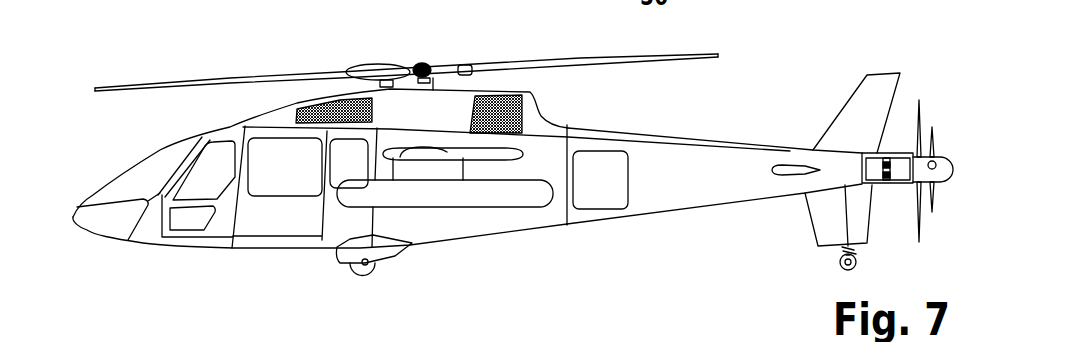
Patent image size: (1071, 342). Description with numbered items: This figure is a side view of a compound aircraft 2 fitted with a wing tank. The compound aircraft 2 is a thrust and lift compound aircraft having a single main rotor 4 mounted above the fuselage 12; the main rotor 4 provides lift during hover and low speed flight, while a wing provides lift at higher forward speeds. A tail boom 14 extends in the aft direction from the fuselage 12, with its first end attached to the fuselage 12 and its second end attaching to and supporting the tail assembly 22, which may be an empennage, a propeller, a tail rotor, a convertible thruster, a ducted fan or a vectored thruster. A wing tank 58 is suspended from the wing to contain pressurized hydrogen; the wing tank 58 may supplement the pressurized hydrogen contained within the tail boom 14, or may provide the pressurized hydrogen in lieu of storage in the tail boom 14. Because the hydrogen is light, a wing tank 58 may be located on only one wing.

The compound aircraft 2 is at (167, 147).
The main rotor 4 is at (207, 82).
The fuselage 12 is at (645, 152).
The tail boom 14 is at (725, 165).
The tail-mounted thruster or empennage assembly 22 is at (865, 85).
The wing tank 58 is at (483, 190).